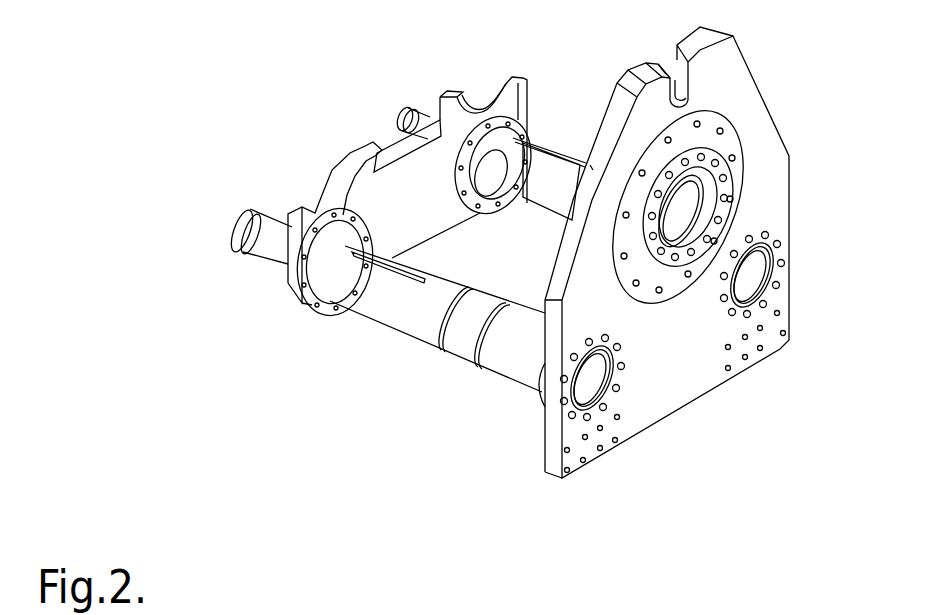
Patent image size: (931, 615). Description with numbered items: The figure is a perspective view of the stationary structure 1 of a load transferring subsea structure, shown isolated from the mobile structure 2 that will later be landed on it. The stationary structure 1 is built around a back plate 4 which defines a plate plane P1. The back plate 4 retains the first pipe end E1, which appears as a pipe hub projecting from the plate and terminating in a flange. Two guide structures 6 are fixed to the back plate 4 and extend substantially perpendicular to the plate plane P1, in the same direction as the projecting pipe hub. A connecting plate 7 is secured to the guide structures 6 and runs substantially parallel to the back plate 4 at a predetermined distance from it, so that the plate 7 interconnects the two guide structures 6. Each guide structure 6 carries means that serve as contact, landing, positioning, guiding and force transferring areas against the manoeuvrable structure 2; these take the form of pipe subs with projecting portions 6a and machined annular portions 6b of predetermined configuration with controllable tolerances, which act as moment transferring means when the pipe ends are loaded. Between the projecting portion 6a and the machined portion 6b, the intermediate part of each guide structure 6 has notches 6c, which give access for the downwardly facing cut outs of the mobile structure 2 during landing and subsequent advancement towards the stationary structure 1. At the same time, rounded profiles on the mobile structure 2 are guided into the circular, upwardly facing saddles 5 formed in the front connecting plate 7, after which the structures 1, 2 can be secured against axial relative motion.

The stationary structure 1 is at (272, 90).
The mobile structure 2 is at (697, 613).
The back plate 4 is at (753, 143).
The saddles 5 is at (323, 207).
The guide structures 6 is at (506, 358).
The projecting portion 6a is at (240, 233).
The annular portion 6b is at (461, 343).
The notches 6c is at (556, 197).
The connecting plate 7 is at (514, 100).
The first pipe end E1 is at (589, 160).
The plate plane P1 is at (677, 361).